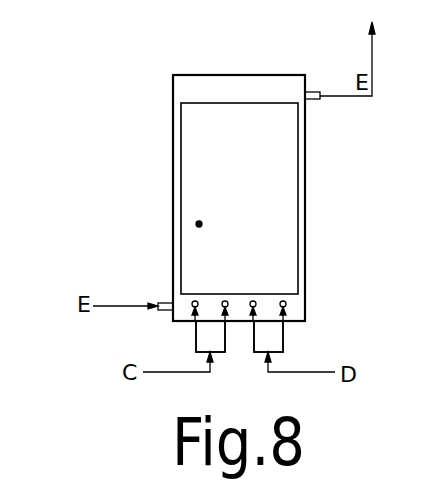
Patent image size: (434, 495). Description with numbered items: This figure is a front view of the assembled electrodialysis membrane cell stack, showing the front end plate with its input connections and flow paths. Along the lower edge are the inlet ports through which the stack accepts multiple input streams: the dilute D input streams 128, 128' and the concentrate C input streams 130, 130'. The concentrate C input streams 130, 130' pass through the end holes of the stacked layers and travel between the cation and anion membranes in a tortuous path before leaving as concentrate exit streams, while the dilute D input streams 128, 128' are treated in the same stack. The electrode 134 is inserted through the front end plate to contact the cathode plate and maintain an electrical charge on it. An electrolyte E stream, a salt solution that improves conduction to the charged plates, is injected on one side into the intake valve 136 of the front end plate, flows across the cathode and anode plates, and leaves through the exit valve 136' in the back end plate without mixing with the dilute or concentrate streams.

The dilute D input stream 128 is at (313, 337).
The dilute D input stream 128' is at (321, 326).
The concentrate C input stream 130 is at (159, 336).
The concentrate C input stream 130' is at (179, 368).
The electrode 134 is at (199, 224).
The intake valve 136 is at (129, 280).
The exit valve 136' is at (347, 124).